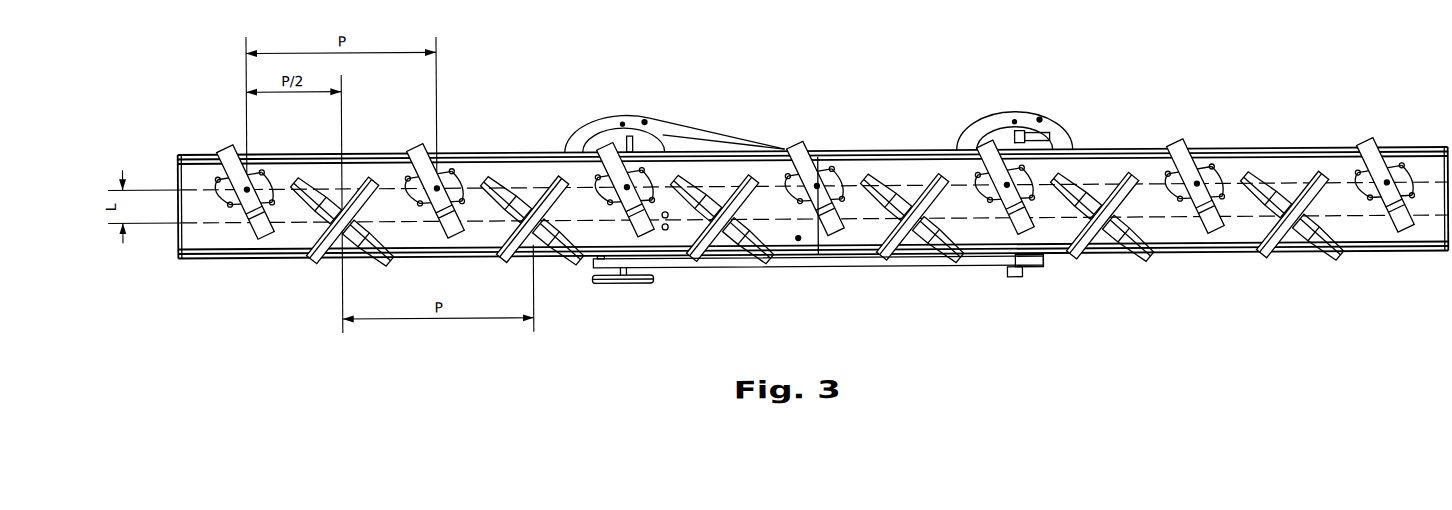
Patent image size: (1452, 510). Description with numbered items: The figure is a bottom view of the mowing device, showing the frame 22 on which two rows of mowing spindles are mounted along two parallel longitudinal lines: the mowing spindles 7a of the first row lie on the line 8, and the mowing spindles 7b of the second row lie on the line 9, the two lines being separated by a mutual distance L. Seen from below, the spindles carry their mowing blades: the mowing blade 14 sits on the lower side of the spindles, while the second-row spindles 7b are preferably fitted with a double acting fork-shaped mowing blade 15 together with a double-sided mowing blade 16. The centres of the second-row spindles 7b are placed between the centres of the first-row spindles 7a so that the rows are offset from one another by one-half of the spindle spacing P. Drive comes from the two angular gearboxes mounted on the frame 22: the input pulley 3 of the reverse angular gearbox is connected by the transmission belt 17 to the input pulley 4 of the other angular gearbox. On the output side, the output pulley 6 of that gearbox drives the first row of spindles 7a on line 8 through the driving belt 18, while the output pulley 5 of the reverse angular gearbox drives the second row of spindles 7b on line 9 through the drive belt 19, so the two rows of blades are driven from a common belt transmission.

The input pulley of the gearbox 2 3 is at (1109, 307).
The input pulley of the gearbox 1 4 is at (685, 319).
The output pulley of the gearbox 2 5 is at (1040, 122).
The output pulley of the gearbox 1 6 is at (645, 121).
The mowing spindles of the first row 7a is at (1094, 134).
The mowing spindles of the second row 7b is at (1180, 261).
The line 8 is at (589, 126).
The line 9 is at (814, 119).
The mowing blade 14 is at (1220, 133).
The fork-shaped mowing blade 15 is at (1299, 149).
The double-sided mowing blade 16 is at (1344, 147).
The transmission belt 17 is at (957, 271).
The driving belt 18 is at (732, 89).
The drive belt 19 is at (812, 142).
The frame 22 is at (845, 260).